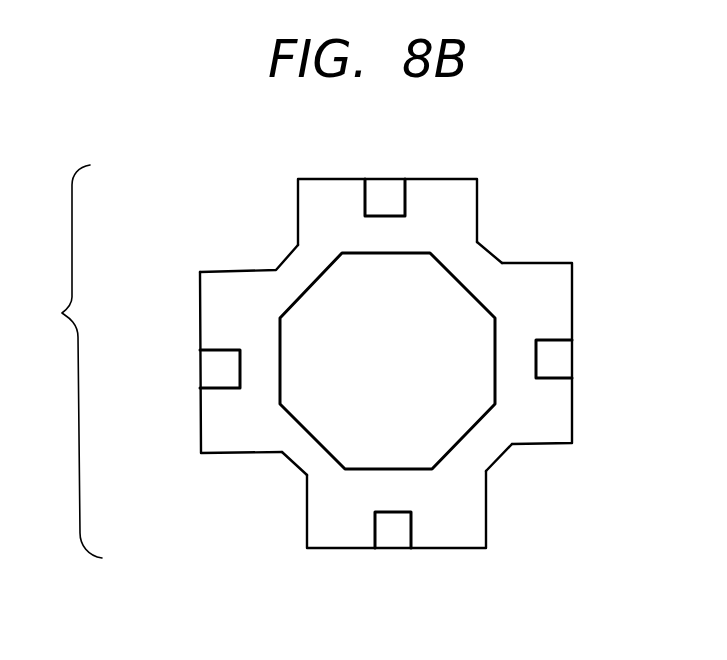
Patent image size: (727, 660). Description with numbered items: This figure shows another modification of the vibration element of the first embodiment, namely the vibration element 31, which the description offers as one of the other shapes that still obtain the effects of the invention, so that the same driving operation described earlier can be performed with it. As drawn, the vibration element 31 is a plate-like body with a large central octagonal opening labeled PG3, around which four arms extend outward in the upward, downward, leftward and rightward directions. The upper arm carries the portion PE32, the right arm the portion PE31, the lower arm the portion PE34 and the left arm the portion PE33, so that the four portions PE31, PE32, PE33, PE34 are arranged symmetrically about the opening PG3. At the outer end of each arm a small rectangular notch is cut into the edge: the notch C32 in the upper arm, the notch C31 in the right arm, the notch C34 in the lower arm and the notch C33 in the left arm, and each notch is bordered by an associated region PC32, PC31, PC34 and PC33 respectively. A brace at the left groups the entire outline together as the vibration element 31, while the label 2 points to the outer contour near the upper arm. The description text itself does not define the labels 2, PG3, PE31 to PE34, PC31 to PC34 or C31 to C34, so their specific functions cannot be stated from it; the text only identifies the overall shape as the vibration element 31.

The pixel electrode 2 is at (383, 335).
The vibration element 31 is at (67, 361).
The pixel gap / opening PG3 is at (450, 282).
The pixel electrode portion PE31 is at (563, 422).
The pixel electrode portion PE32 is at (458, 185).
The pixel electrode portion PE33 is at (215, 295).
The pixel electrode portion PE34 is at (320, 520).
The pixel contact PC31 is at (577, 365).
The pixel contact PC32 is at (392, 180).
The pixel contact PC33 is at (200, 362).
The pixel contact PC34 is at (383, 550).
The contact hole C31 is at (602, 369).
The contact hole C32 is at (383, 169).
The contact hole C33 is at (173, 377).
The contact hole C34 is at (406, 567).